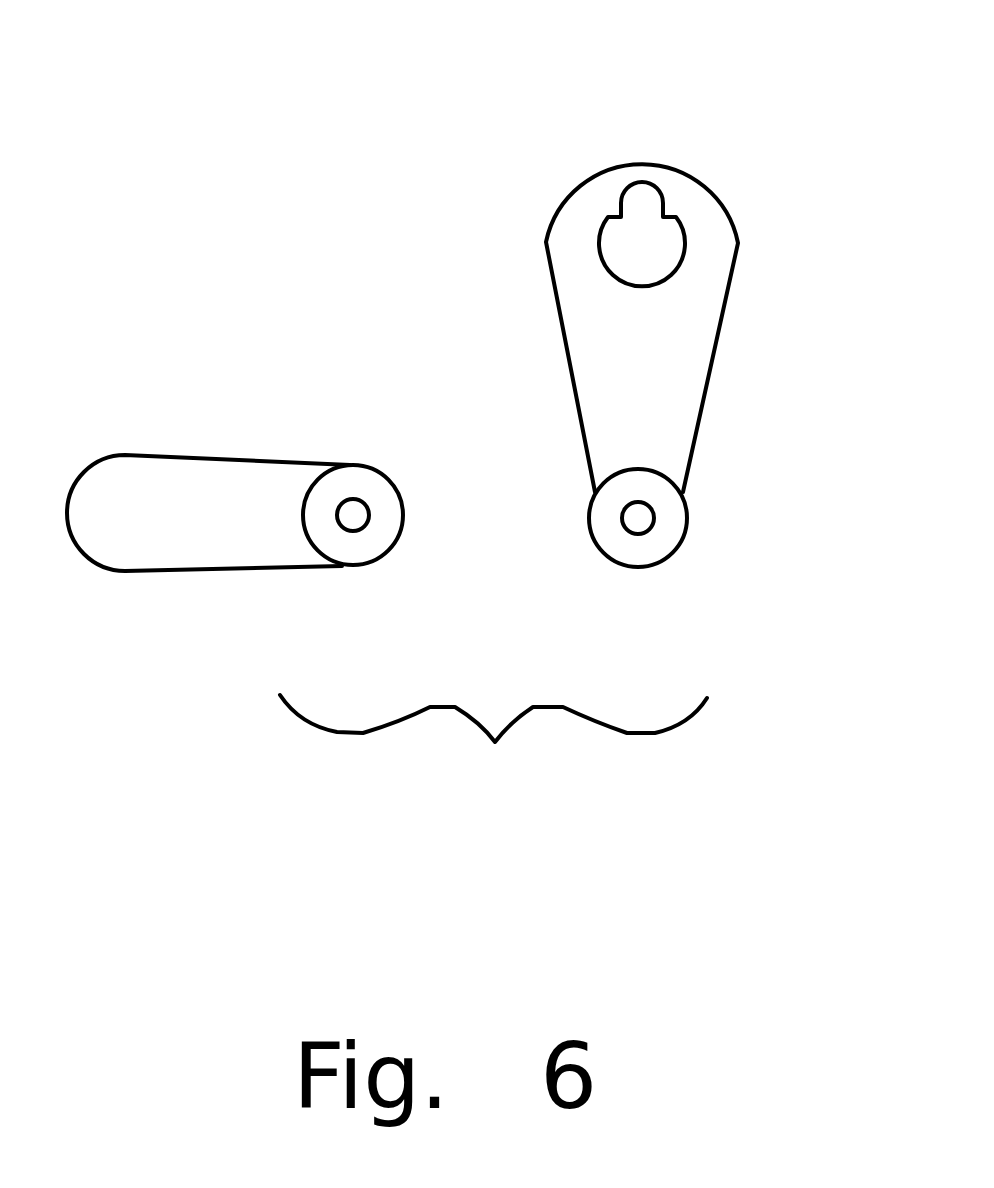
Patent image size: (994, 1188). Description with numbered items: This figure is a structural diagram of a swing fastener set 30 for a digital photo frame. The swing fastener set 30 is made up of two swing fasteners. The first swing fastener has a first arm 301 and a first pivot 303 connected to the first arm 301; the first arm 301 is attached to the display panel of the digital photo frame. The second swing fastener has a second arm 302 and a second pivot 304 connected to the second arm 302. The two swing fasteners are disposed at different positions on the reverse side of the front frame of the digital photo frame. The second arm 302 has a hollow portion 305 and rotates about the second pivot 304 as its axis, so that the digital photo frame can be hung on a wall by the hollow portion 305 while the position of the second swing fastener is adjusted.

The swing fastener set 30 is at (493, 759).
The first arm 301 is at (193, 457).
The second arm 302 is at (712, 372).
The first pivot 303 is at (400, 538).
The second pivot 304 is at (690, 513).
The hollow portion 305 is at (632, 250).